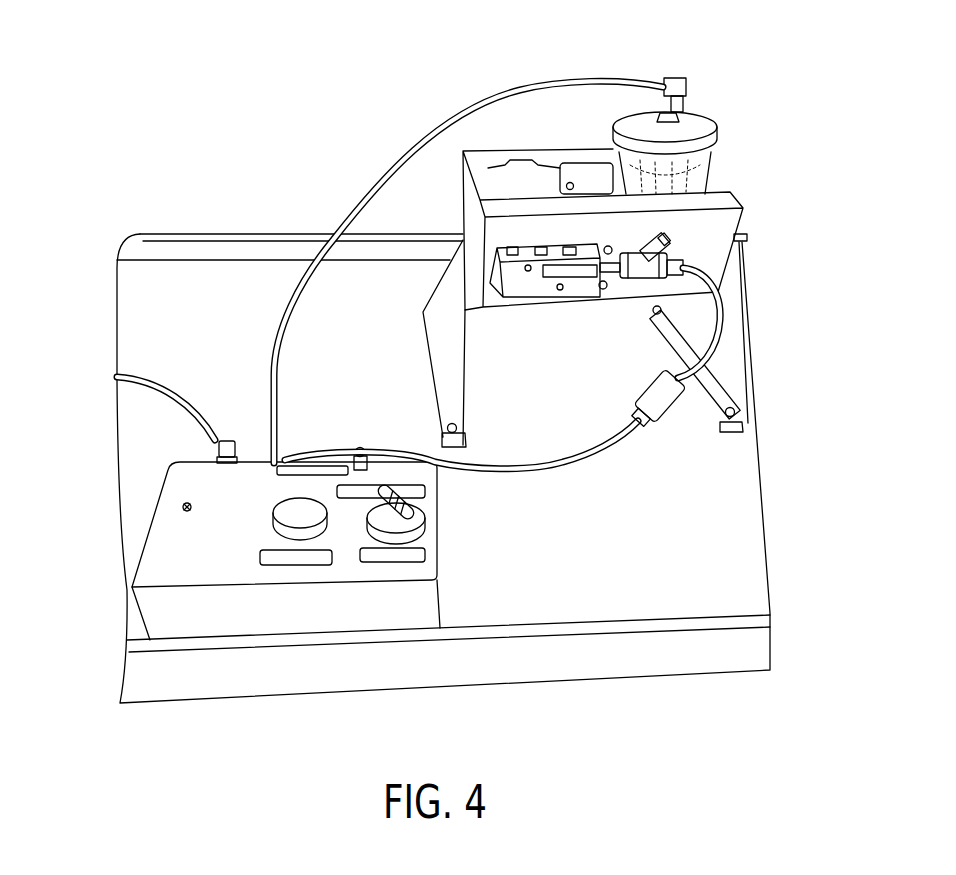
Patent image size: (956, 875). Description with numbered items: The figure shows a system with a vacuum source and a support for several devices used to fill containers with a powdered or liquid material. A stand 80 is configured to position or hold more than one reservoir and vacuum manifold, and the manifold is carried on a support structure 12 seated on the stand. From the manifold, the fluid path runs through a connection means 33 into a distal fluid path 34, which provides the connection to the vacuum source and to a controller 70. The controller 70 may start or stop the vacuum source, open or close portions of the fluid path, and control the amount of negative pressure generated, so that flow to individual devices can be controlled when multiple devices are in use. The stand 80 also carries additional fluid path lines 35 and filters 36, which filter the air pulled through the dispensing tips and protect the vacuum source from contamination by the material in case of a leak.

The support structure 12 is at (708, 130).
The connection means 33 is at (684, 87).
The distal fluid path 34 is at (566, 86).
The fluid path lines 35 is at (567, 466).
The filters 36 is at (667, 403).
The controller 70 is at (152, 561).
The stand 80 is at (760, 244).